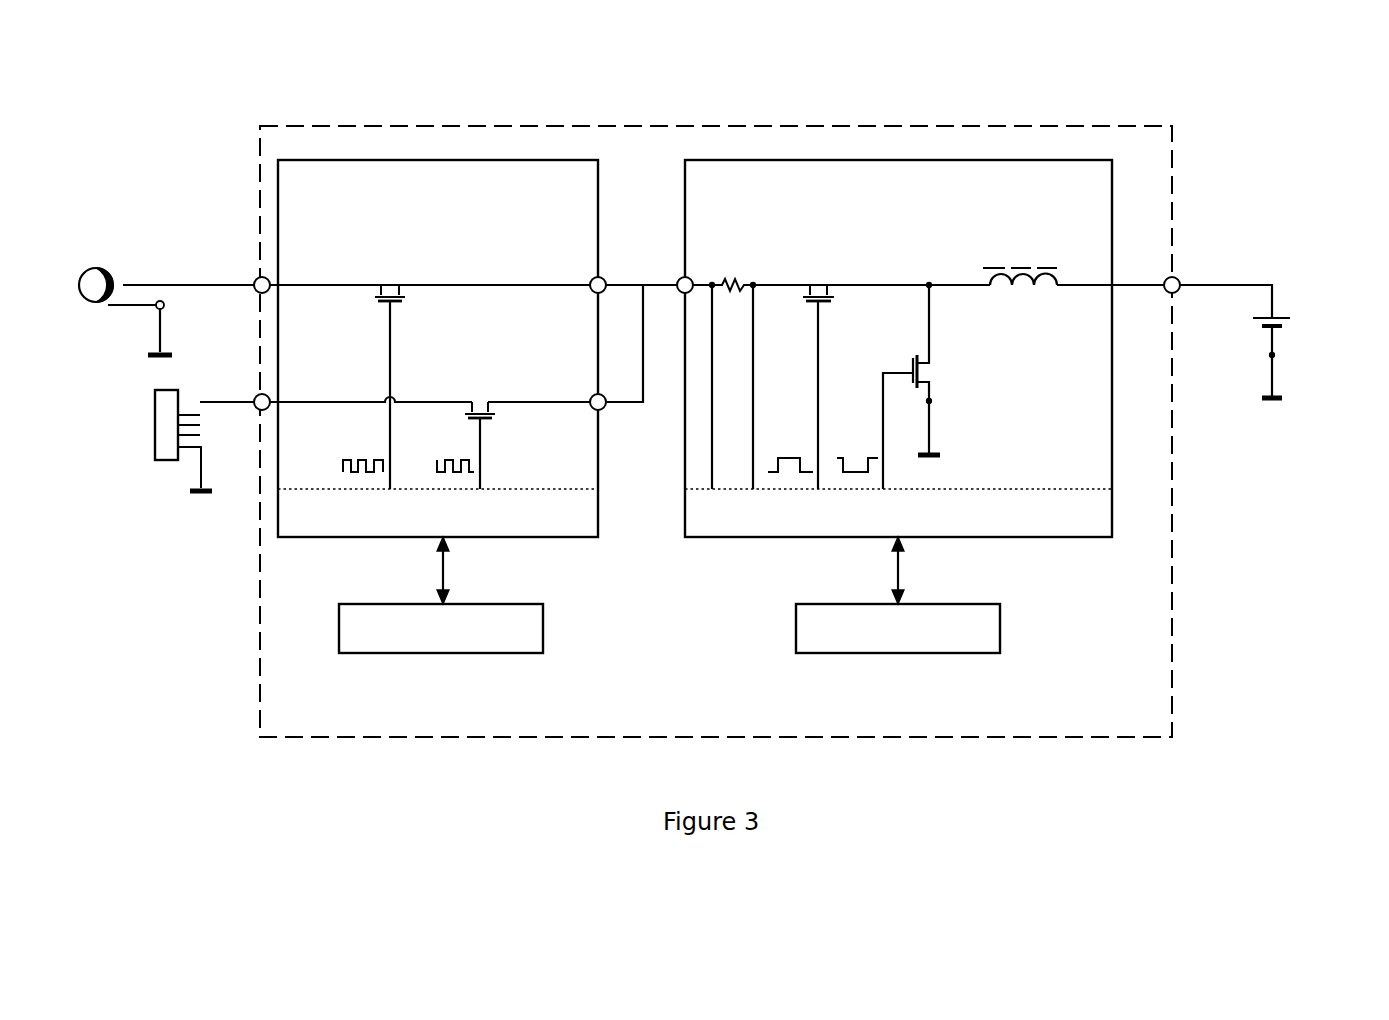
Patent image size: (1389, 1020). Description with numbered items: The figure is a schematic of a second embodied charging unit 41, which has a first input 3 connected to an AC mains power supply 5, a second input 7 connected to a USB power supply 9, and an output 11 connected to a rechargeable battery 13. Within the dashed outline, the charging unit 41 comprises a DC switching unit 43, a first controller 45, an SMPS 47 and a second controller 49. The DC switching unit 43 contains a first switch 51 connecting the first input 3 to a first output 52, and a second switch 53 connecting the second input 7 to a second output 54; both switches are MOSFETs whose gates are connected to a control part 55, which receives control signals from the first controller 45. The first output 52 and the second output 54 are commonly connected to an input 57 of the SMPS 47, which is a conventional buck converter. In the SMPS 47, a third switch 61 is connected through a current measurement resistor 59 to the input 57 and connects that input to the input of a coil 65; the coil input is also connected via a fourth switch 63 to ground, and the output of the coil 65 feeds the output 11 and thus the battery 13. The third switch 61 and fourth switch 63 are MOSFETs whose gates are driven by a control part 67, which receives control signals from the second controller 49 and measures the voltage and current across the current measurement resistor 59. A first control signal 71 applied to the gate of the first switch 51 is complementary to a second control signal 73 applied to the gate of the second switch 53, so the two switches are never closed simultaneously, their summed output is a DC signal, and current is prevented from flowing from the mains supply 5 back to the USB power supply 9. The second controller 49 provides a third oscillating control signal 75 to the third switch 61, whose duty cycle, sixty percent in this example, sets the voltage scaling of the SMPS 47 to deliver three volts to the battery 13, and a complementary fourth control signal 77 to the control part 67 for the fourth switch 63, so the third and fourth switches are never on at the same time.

The first input 3 is at (254, 280).
The AC mains power supply 5 is at (100, 262).
The second input 7 is at (255, 395).
The USB power supply 9 is at (152, 448).
The output 11 is at (1180, 278).
The rechargeable battery 13 is at (1290, 323).
The charging unit 41 is at (337, 126).
The DC switching unit 43 is at (565, 158).
The first controller 45 is at (545, 622).
The SMPS 47 is at (845, 158).
The second controller 49 is at (1002, 622).
The first switch 51 is at (385, 275).
The first output 52 is at (605, 278).
The second switch 53 is at (485, 397).
The second output 54 is at (603, 412).
The control part 55 is at (578, 530).
The input 57 is at (690, 278).
The current measurement resistor 59 is at (732, 278).
The third switch 61 is at (820, 278).
The fourth switch 63 is at (943, 372).
The coil 65 is at (1018, 257).
The control part 67 is at (1087, 520).
The first control signal 71 is at (340, 462).
The second control signal 73 is at (447, 462).
The third oscillating control signal 75 is at (793, 460).
The fourth control signal 77 is at (863, 460).